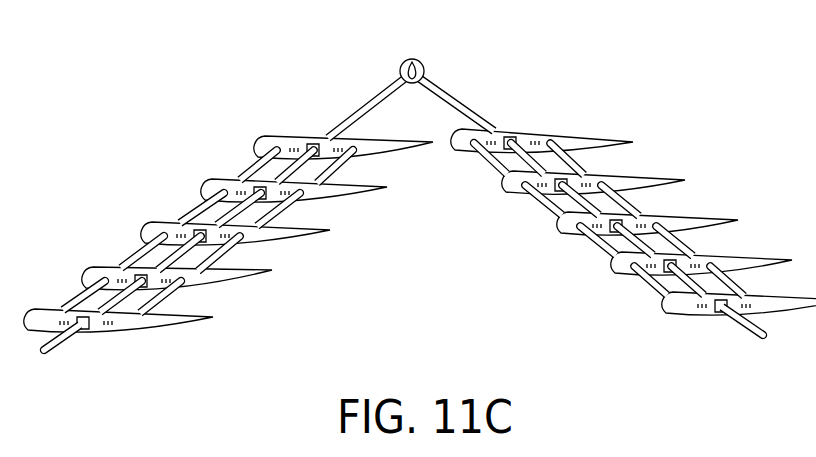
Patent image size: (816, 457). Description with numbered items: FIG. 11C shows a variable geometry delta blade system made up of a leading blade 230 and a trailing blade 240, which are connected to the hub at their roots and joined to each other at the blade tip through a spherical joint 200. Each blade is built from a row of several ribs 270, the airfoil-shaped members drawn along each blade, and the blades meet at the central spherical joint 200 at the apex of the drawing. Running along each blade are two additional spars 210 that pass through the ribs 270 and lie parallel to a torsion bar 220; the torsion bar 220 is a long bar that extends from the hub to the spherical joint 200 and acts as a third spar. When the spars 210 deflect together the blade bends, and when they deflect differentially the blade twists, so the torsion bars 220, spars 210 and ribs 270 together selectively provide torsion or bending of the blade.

The spherical joint 200 is at (423, 63).
The spars 210 is at (193, 207).
The torsion bar 220 is at (378, 98).
The leading blade 230 is at (137, 218).
The trailing blade 240 is at (697, 172).
The rib 270 is at (300, 133).